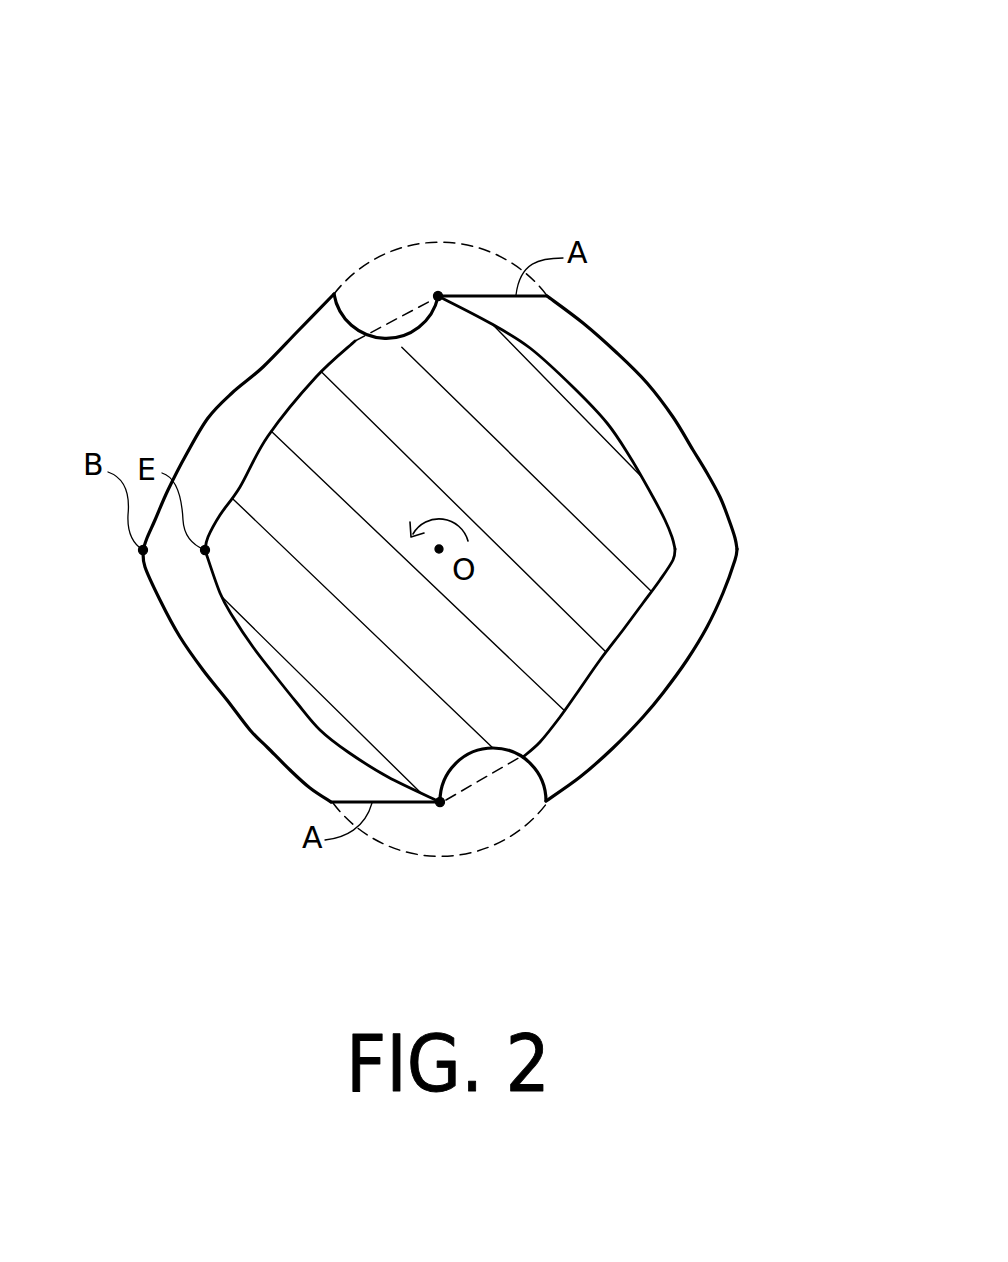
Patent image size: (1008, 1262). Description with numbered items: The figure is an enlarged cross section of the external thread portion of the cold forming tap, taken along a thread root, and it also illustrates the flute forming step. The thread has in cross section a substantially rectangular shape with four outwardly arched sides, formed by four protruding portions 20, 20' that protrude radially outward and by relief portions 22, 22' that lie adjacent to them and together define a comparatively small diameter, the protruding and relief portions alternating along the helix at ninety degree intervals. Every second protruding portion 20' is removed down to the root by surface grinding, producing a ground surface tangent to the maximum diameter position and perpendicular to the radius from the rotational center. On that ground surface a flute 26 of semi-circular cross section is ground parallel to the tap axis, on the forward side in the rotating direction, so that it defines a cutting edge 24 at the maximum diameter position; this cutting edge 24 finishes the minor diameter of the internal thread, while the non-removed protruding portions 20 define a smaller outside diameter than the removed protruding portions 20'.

The protruding portion 20 is at (482, 549).
The protruding portion 20' is at (451, 554).
The relief portion 22 is at (467, 580).
The relief portion 22' is at (437, 547).
The cutting edge 24 is at (402, 873).
The flute 26 is at (422, 332).